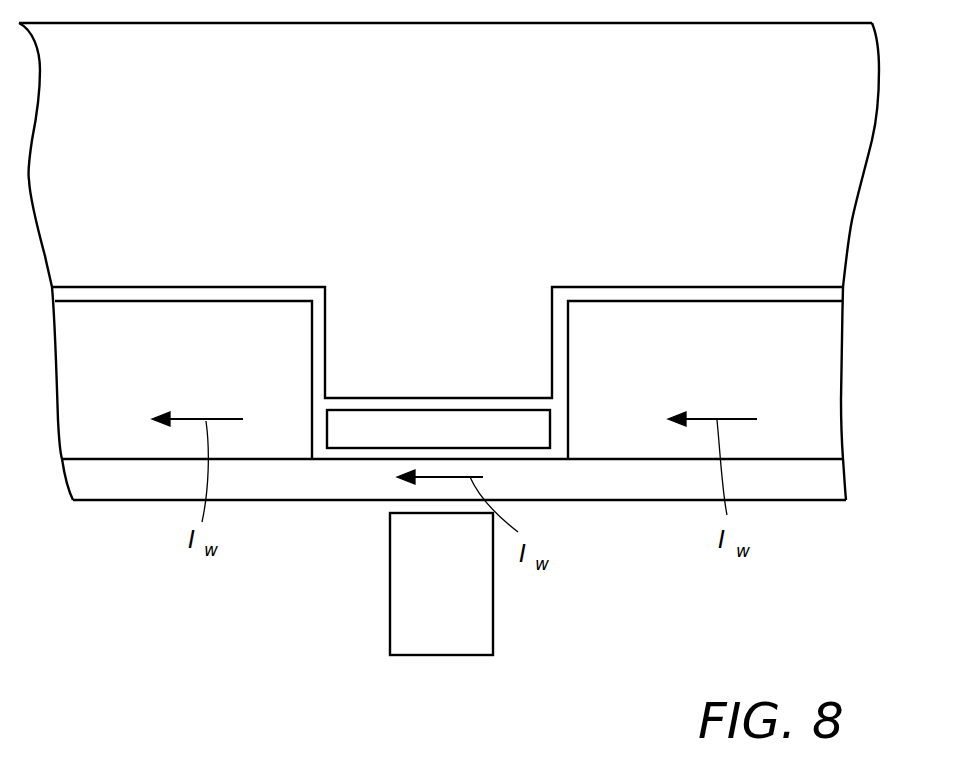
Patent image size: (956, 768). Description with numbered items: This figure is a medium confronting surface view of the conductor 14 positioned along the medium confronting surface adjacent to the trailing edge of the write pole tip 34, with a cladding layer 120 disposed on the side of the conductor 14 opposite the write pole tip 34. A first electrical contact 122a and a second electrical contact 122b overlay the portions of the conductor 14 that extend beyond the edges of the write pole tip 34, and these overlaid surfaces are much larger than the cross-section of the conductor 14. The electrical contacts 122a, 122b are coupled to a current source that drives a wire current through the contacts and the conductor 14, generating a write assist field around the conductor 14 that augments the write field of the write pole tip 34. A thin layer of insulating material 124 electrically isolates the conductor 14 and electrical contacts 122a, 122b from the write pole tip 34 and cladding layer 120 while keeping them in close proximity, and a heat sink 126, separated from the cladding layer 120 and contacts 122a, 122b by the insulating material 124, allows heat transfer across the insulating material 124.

The heat sink 126 is at (456, 166).
The insulating material 124 is at (322, 329).
The first electrical contact 122a is at (224, 368).
The second electrical contact 122b is at (734, 366).
The cladding layer 120 is at (442, 433).
The conductor 14 is at (600, 486).
The write pole tip 34 is at (458, 596).